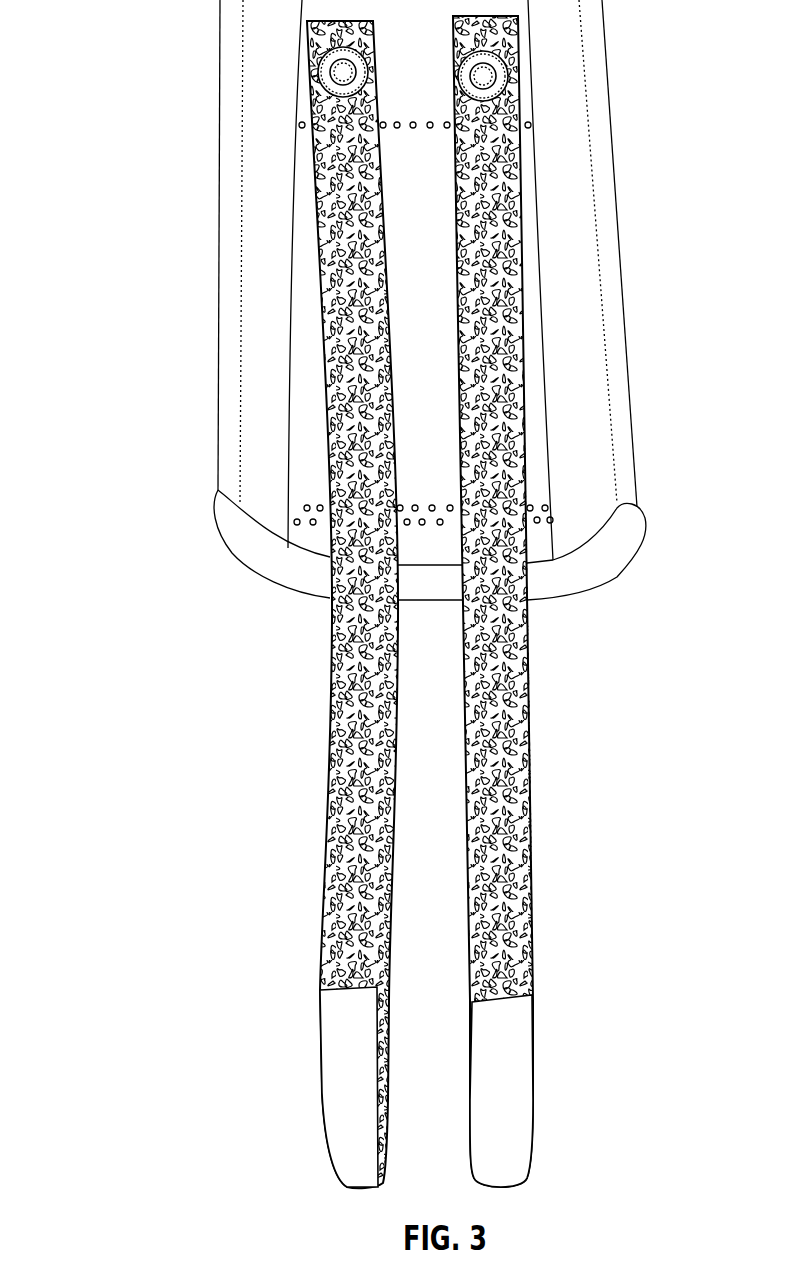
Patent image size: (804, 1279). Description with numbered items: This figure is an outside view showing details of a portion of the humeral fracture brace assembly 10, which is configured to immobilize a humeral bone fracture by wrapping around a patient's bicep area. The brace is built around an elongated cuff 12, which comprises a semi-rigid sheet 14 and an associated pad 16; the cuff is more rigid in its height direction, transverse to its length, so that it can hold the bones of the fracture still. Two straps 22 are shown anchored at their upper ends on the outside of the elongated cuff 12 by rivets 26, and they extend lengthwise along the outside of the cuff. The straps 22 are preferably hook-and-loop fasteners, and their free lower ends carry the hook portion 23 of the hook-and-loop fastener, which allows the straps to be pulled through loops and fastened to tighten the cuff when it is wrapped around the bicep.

The humeral fracture brace assembly 10 is at (108, 55).
The elongated cuff 12 is at (238, 220).
The semi-rigid sheet 14 is at (285, 488).
The pad 16 is at (585, 428).
The straps 22 is at (313, 238).
The hook portion 23 is at (367, 1128).
The rivets 26 is at (318, 72).